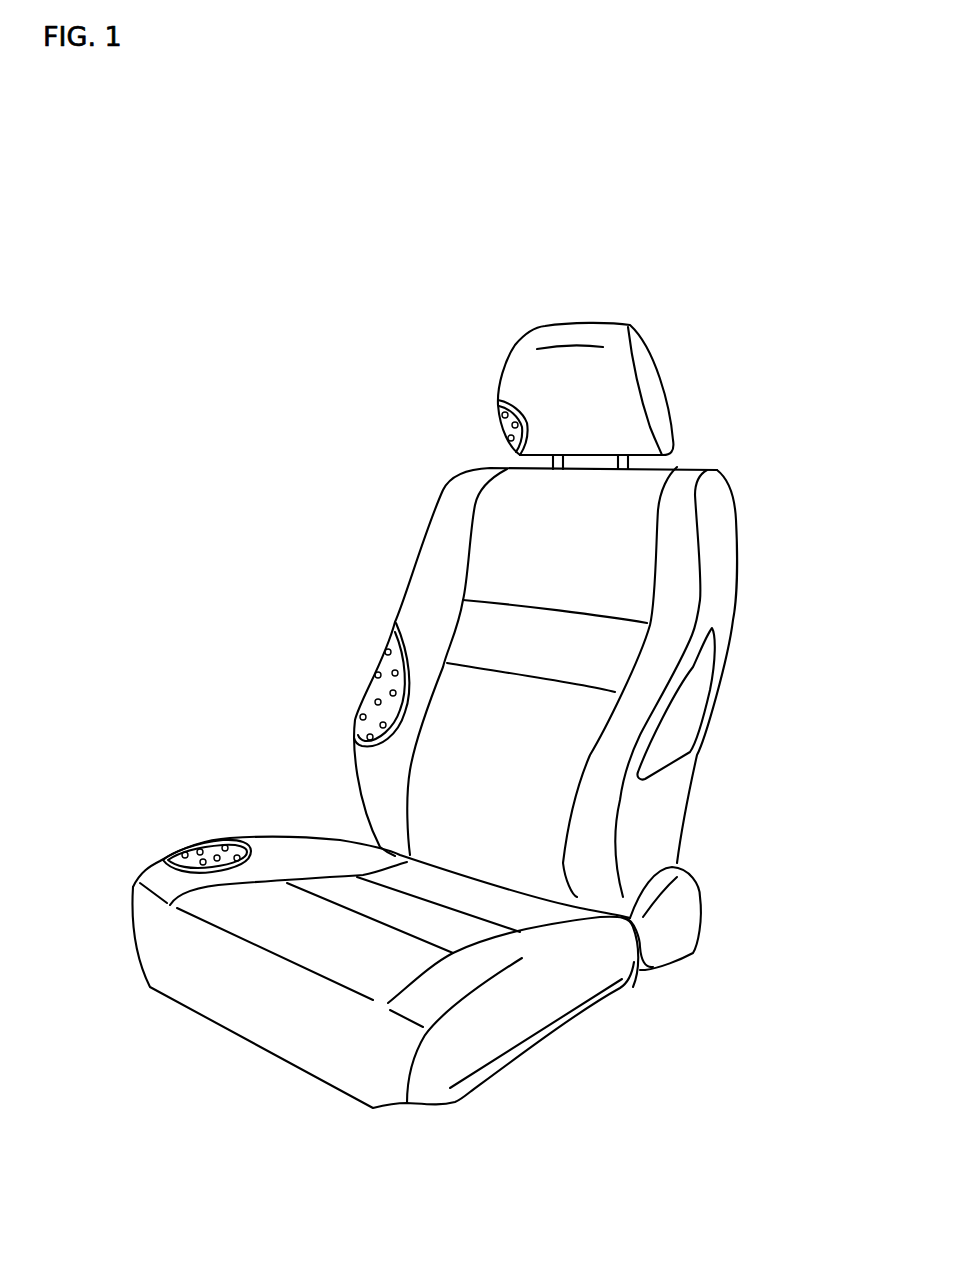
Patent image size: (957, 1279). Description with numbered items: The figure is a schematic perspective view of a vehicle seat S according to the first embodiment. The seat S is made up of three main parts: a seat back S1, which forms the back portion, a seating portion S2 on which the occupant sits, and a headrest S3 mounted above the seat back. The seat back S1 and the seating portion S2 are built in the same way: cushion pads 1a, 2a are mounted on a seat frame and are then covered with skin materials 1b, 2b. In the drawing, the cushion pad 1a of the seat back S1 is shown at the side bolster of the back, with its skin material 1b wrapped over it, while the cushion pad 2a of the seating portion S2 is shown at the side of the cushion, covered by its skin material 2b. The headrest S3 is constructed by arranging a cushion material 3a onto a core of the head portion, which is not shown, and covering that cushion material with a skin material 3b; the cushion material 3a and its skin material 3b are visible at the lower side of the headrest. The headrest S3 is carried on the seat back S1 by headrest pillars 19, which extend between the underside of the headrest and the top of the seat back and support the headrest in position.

The vehicle seat S is at (184, 268).
The seat back S1 is at (395, 560).
The seating portion S2 is at (283, 830).
The headrest S3 is at (490, 340).
The cushion pad 1a is at (377, 693).
The skin material 1b is at (397, 625).
The cushion pad 2a is at (187, 846).
The skin material 2b is at (240, 838).
The cushion material 3a is at (500, 425).
The skin material 3b is at (498, 402).
The headrest pillars 19 is at (635, 464).